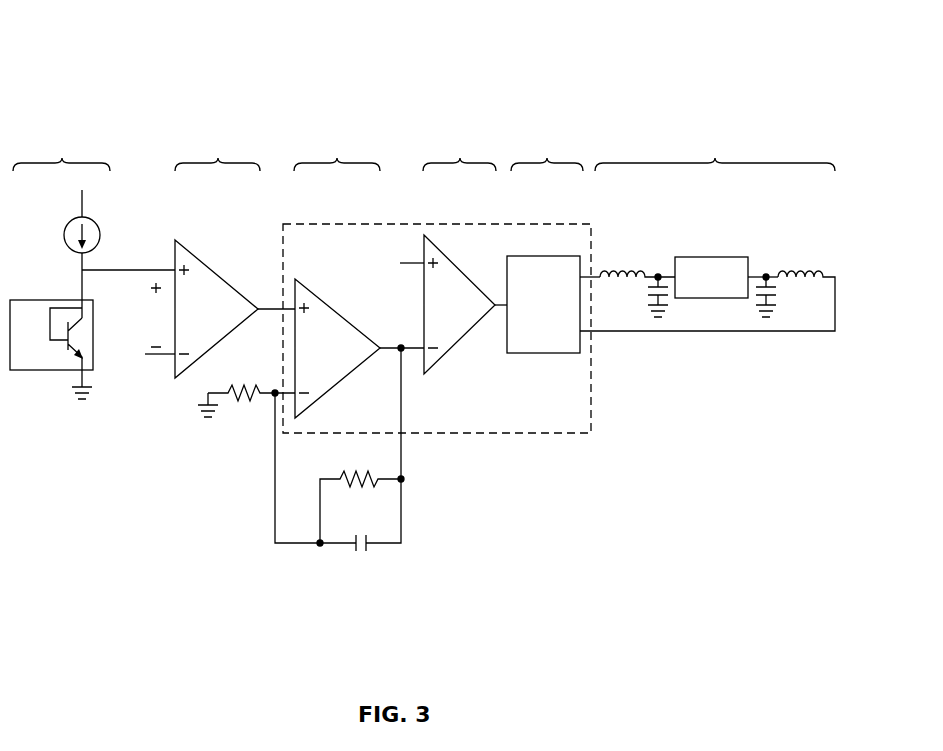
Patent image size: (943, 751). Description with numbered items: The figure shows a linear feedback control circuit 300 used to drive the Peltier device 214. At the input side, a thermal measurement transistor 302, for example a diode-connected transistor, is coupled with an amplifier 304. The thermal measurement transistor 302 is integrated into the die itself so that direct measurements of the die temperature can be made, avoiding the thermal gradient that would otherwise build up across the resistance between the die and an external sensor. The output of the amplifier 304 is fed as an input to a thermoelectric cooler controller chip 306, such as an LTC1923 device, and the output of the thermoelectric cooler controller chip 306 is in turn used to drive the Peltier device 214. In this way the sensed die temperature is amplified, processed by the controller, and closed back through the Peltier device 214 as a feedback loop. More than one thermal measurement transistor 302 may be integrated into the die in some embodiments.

The linear feedback control circuit 300 is at (103, 47).
The thermal measurement transistor 302 is at (53, 356).
The amplifier 304 is at (207, 265).
The thermoelectric cooler controller chip 306 is at (533, 434).
The Peltier device 214 is at (753, 262).